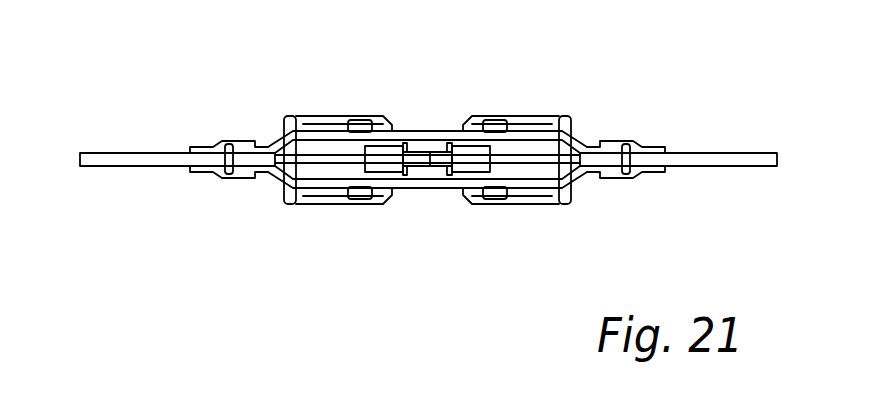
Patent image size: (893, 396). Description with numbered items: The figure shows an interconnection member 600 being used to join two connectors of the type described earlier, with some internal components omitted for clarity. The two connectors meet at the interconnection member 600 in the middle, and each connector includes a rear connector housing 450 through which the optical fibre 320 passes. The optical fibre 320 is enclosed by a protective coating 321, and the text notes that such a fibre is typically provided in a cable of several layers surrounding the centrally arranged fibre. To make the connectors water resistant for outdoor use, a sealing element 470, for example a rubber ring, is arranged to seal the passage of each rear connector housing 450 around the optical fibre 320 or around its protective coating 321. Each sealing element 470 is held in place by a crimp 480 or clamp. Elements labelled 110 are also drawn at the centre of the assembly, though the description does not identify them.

The conductor contact pins 110 is at (414, 166).
The optical fibre 320 is at (574, 181).
The protective coating 321 is at (742, 153).
The rear connector housing 450 is at (274, 141).
The sealing element 470 is at (230, 143).
The crimp 480 is at (667, 148).
The interconnection member 600 is at (428, 113).